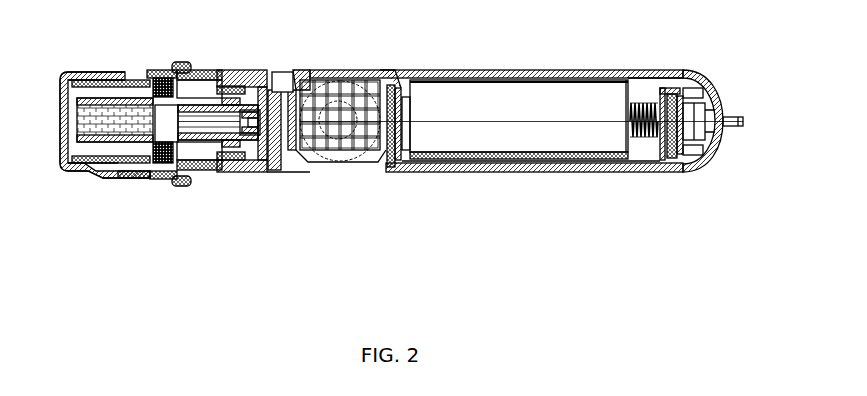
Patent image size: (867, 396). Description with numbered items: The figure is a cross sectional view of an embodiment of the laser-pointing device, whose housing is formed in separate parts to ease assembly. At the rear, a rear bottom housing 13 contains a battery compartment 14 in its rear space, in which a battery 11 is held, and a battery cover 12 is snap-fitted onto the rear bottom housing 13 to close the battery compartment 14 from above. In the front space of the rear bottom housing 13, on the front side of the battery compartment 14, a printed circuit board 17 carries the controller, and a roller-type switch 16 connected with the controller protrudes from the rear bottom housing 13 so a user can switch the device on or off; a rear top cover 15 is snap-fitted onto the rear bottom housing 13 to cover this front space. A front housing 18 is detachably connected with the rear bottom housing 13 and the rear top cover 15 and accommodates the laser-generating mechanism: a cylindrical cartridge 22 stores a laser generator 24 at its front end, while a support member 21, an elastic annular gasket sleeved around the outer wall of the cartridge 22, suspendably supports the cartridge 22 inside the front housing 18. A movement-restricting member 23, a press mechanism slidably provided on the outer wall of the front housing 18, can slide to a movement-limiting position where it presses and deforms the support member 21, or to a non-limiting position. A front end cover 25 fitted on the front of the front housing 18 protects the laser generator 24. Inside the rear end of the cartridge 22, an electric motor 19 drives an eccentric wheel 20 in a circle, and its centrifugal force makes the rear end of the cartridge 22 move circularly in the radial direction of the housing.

The battery 11 is at (468, 112).
The battery cover 12 is at (552, 75).
The rear bottom housing 13 is at (577, 167).
The battery compartment 14 is at (479, 155).
The rear top cover 15 is at (363, 75).
The roller-type switch 16 is at (342, 161).
The printed circuit board 17 is at (308, 85).
The front housing 18 is at (199, 167).
The electric motor 19 is at (213, 123).
The eccentric wheel 20 is at (256, 127).
The support member 21 is at (188, 72).
The cartridge 22 is at (172, 123).
The movement-restricting member 23 is at (153, 70).
The laser generator 24 is at (113, 120).
The front end cover 25 is at (87, 77).